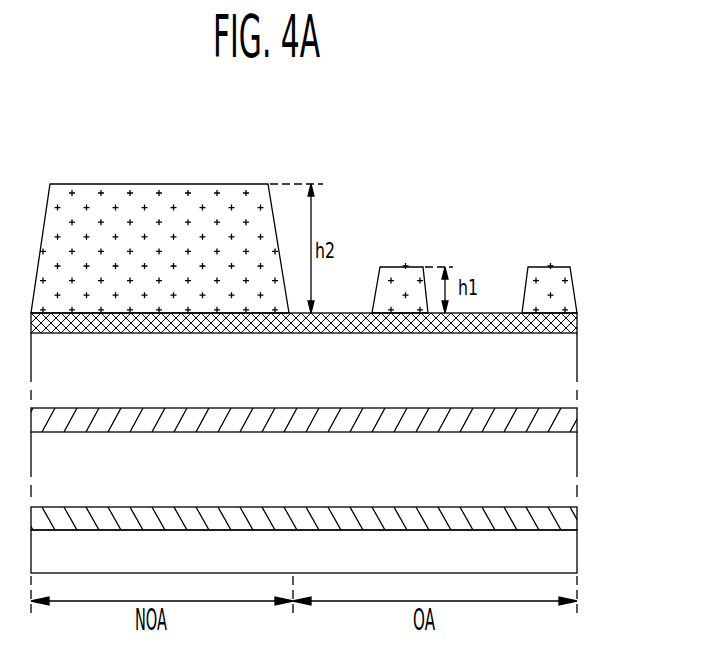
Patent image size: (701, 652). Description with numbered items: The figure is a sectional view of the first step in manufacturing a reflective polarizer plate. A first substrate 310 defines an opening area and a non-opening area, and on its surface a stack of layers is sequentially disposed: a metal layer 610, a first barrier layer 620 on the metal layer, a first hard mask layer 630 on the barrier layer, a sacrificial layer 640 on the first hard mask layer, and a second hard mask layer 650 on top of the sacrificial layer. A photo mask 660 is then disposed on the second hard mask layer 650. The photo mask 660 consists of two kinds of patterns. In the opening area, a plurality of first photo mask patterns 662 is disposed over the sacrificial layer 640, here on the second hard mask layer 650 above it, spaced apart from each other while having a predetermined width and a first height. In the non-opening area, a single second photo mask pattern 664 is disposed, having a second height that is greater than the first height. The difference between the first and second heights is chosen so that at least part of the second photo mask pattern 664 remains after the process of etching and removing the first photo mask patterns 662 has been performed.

The first substrate 310 is at (567, 553).
The metal layer 610 is at (567, 516).
The first barrier layer 620 is at (567, 463).
The first hard mask layer 630 is at (567, 420).
The sacrificial layer 640 is at (567, 369).
The second hard mask layer 650 is at (577, 324).
The photo mask 660 is at (420, 120).
The first photo mask patterns 662 is at (397, 277).
The second photo mask pattern 664 is at (165, 184).